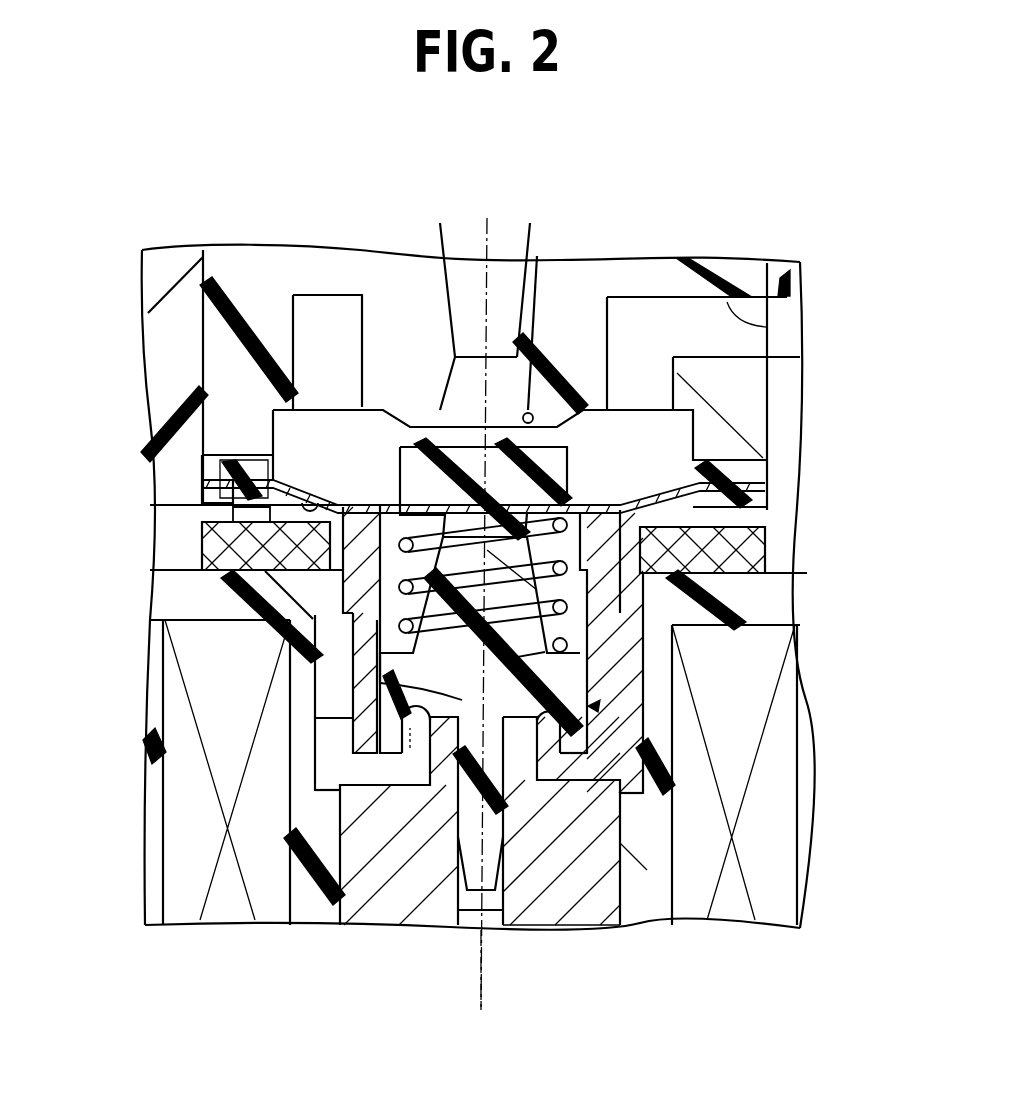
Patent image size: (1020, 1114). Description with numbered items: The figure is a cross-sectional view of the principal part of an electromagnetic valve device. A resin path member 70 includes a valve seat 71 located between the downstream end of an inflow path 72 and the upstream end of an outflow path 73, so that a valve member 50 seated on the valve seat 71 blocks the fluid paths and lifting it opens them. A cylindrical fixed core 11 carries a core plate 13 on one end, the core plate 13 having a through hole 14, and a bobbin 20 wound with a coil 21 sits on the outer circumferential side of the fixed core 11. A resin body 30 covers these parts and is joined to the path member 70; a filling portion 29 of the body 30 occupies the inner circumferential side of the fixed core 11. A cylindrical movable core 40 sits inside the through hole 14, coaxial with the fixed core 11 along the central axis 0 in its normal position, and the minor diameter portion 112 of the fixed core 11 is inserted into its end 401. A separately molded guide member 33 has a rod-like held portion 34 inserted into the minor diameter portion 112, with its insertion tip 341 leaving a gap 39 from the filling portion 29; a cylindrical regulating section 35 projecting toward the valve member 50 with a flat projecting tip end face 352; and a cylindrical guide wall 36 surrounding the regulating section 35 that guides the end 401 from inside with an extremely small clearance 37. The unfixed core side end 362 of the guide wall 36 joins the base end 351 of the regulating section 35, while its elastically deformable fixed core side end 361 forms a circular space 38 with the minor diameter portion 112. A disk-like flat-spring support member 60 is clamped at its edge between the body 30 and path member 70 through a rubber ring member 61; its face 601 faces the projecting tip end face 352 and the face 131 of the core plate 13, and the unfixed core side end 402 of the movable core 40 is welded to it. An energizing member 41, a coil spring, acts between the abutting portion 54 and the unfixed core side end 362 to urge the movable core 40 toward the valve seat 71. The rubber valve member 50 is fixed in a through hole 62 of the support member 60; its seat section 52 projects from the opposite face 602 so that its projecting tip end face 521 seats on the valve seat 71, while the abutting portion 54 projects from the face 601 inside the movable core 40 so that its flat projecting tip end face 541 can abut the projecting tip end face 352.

The central axis 0 is at (490, 232).
The fixed core 11 is at (603, 910).
The core plate 13 is at (760, 577).
The through hole 14 is at (300, 555).
The bobbin 20 is at (657, 863).
The coil 21 is at (770, 772).
The filling portion 29 is at (492, 920).
The body 30 is at (157, 355).
The guide member 33 is at (598, 706).
The held portion 34 is at (473, 822).
The regulating section 35 is at (605, 583).
The guide wall 36 is at (400, 748).
The clearance 37 is at (365, 658).
The space 38 is at (330, 745).
The gap 39 is at (497, 903).
The movable core 40 is at (630, 655).
The energizing member 41 is at (343, 650).
The valve member 50 is at (425, 460).
The seat section 52 is at (640, 460).
The abutting portion 54 is at (693, 512).
The support member 60 is at (640, 497).
The rubber ring member 61 is at (205, 472).
The through hole 62 is at (531, 412).
The path member 70 is at (667, 267).
The valve seat 71 is at (540, 400).
The inflow path 72 is at (767, 327).
The outflow path 73 is at (453, 268).
The minor diameter portion 112 is at (343, 785).
The face 131 is at (222, 488).
The insertion tip 341 is at (473, 872).
The base end 351 is at (335, 722).
The projecting tip end face 352 is at (355, 580).
The fixed core side end 361 is at (560, 745).
The unfixed core side end 362 is at (575, 672).
The end 401 is at (152, 750).
The unfixed core side end 402 is at (262, 522).
The projecting tip end face 521 is at (540, 447).
The projecting tip end face 541 is at (640, 545).
The face 601 is at (306, 503).
The face 602 is at (423, 482).